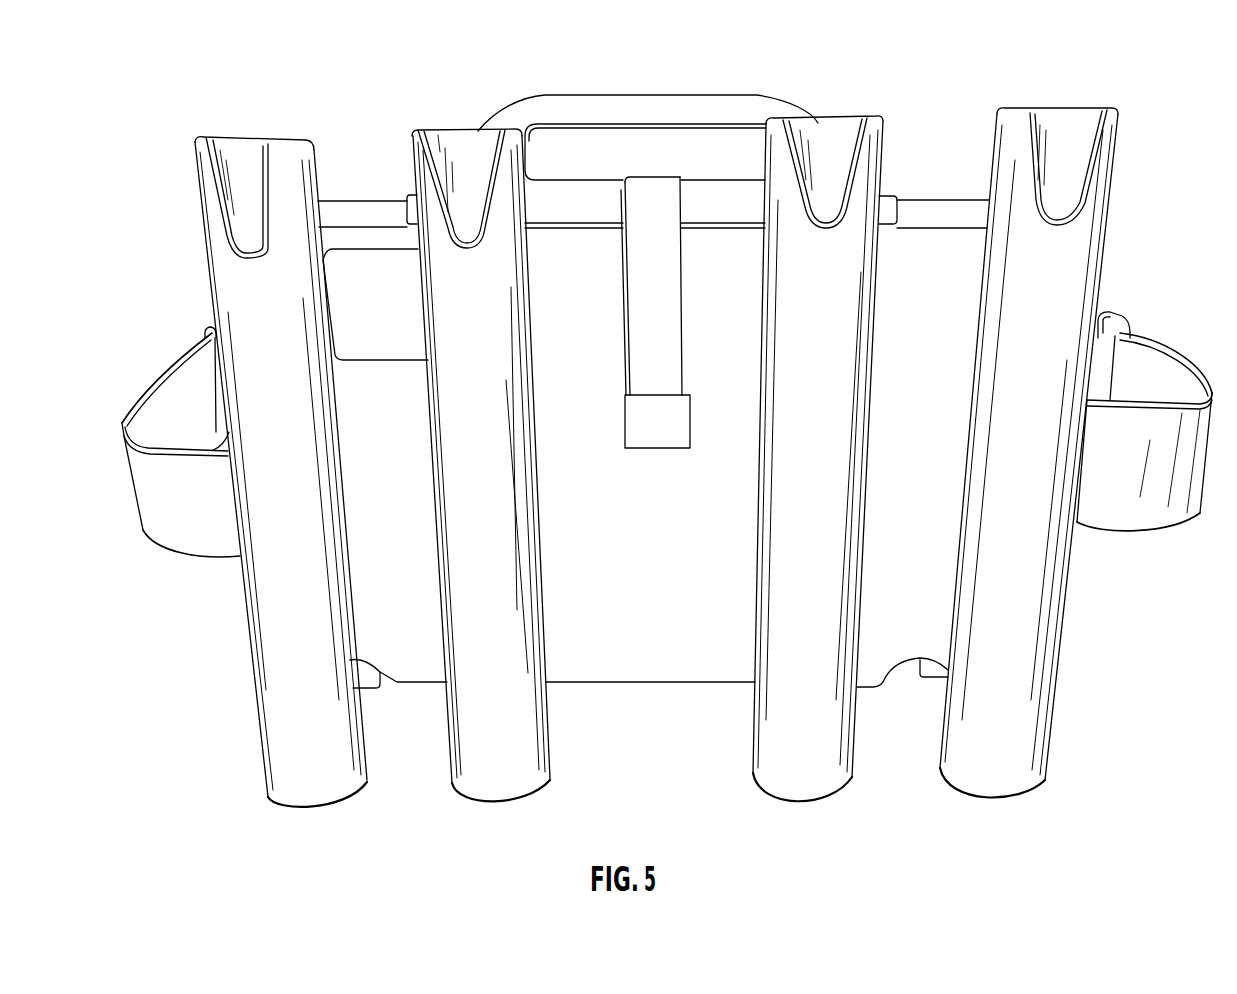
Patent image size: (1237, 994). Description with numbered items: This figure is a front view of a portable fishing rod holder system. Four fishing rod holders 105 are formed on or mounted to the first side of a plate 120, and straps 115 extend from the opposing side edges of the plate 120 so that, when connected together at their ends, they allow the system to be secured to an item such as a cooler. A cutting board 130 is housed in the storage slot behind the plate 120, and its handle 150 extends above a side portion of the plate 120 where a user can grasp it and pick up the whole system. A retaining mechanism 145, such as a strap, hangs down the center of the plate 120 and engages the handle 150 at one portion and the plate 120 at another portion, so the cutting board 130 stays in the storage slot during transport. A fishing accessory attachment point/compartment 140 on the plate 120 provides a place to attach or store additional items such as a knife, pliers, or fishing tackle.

The fishing rod holder 105 is at (245, 162).
The strap 115 is at (148, 384).
The plate 120 is at (625, 643).
The cutting board 130 is at (367, 210).
The fishing accessory attachment point/compartment 140 is at (398, 338).
The retaining mechanism 145 is at (660, 449).
The handle 150 is at (624, 108).